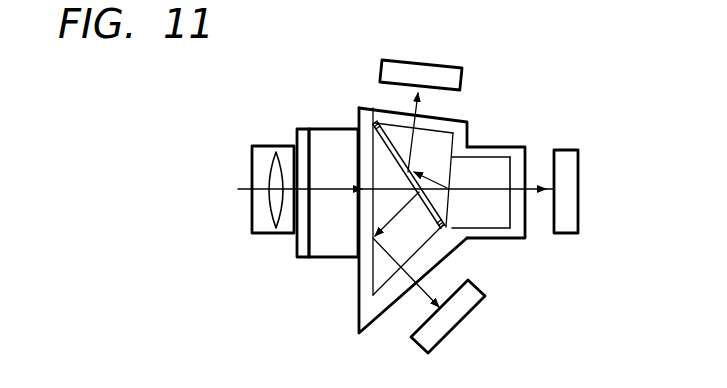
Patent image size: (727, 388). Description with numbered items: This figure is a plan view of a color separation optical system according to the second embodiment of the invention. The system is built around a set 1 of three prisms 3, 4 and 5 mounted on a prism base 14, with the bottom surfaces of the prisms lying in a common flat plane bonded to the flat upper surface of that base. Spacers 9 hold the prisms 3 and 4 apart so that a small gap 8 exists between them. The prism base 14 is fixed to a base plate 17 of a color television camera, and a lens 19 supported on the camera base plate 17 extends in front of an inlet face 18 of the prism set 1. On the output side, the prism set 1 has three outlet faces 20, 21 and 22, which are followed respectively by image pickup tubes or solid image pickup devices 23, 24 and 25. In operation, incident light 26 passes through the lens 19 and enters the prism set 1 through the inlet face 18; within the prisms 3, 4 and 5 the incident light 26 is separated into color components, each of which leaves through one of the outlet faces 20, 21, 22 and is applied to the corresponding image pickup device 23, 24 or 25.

The set of prisms 1 is at (482, 217).
The prism 3 is at (378, 272).
The prism 4 is at (447, 138).
The prism 5 is at (500, 163).
The small gap 8 is at (372, 149).
The spacers 9 is at (372, 124).
The prism base 14 is at (523, 232).
The base plate 17 is at (302, 127).
The inlet face 18 is at (373, 224).
The lens 19 is at (273, 165).
The outlet face 20 is at (382, 284).
The outlet face 21 is at (392, 122).
The outlet face 22 is at (512, 168).
The image pickup device 23 is at (462, 308).
The image pickup device 24 is at (445, 70).
The image pickup device 25 is at (573, 172).
The incident light 26 is at (303, 214).